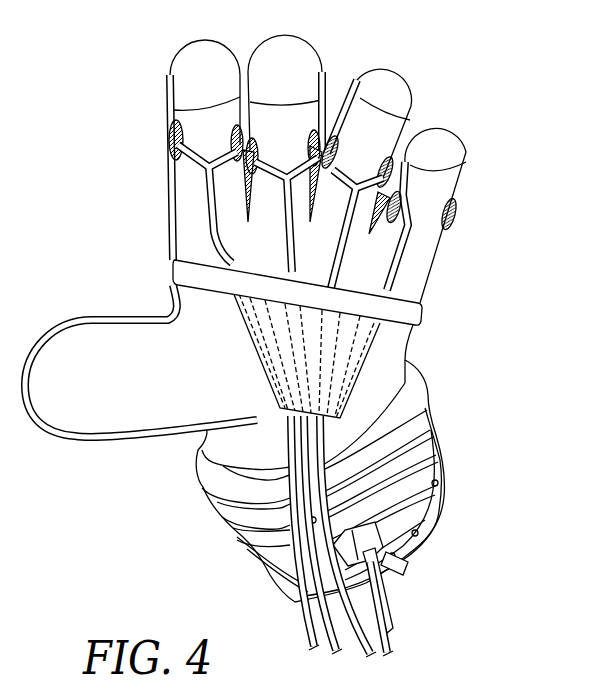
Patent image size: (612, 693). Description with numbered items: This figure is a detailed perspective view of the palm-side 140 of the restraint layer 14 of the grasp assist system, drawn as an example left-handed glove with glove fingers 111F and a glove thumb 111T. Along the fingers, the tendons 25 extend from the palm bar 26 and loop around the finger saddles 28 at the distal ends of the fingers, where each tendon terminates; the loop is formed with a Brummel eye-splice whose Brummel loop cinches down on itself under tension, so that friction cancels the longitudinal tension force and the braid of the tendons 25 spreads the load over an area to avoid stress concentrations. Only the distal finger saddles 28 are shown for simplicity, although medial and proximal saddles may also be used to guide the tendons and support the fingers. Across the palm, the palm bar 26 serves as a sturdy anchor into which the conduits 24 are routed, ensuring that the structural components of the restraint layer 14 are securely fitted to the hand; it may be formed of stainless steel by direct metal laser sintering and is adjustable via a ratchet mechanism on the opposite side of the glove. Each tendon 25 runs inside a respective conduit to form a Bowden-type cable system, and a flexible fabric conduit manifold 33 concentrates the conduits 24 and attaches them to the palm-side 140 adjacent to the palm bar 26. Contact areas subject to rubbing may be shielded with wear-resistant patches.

The restraint layer 14 is at (489, 86).
The glove fingers 111F is at (263, 43).
The glove thumb 111T is at (92, 320).
The finger saddles 28 is at (171, 134).
The tendons 25 is at (207, 218).
The palm bar 26 is at (409, 316).
The conduit manifold 33 is at (310, 350).
The conduits 24 is at (318, 648).
The palm-side 140 is at (252, 355).